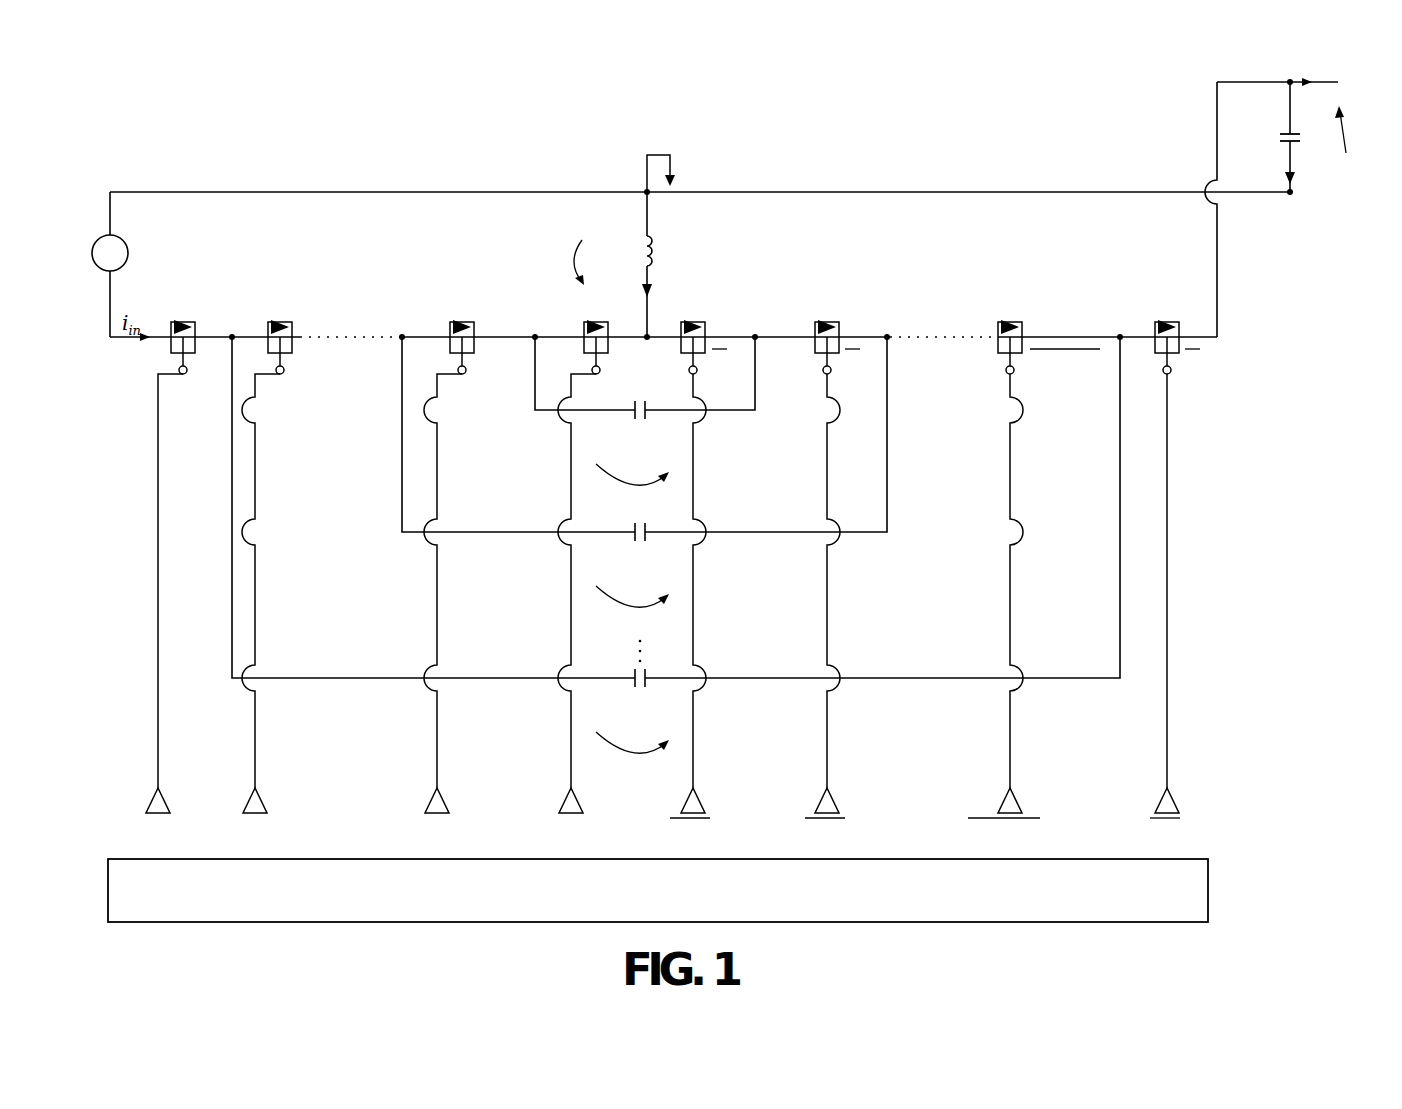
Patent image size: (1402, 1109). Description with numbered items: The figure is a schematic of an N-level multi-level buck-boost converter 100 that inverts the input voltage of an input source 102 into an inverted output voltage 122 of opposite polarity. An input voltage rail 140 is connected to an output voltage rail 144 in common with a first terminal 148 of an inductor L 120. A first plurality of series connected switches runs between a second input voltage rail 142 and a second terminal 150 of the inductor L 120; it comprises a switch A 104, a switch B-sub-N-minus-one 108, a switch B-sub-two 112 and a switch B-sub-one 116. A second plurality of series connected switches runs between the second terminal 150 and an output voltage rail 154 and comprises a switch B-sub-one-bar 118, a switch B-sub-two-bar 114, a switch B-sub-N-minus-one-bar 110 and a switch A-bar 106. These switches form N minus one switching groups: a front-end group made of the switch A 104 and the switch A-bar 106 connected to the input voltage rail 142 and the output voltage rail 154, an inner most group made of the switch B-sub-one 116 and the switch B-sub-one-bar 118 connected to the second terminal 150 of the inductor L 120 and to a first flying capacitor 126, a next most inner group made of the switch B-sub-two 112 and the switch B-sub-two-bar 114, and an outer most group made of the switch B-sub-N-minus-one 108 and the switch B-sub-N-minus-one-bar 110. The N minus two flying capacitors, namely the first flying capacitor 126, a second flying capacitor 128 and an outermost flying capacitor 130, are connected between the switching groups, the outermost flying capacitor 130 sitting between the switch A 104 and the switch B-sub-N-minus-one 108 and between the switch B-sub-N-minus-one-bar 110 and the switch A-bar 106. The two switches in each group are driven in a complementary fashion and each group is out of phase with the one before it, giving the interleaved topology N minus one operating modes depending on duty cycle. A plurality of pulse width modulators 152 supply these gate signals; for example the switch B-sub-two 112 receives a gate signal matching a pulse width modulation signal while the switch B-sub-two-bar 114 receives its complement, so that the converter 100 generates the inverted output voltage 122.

The multi-level buck-boost converter 100 is at (140, 125).
The input source 102 is at (128, 250).
The switch A 104 is at (180, 322).
The switch A-bar 106 is at (1163, 322).
The switch B(N-1) 108 is at (282, 322).
The switch B(N-1)-bar 110 is at (1010, 322).
The switch B2 112 is at (455, 322).
The switch B2-bar 114 is at (832, 322).
The switch B1 116 is at (590, 322).
The switch B1-bar 118 is at (698, 322).
The inductor L 120 is at (652, 258).
The inverted output voltage 122 is at (1346, 153).
The flying capacitor CF1 126 is at (648, 412).
The flying capacitor CF2 128 is at (648, 534).
The flying capacitor CF(N-2) 130 is at (648, 681).
The input voltage rail 140 is at (215, 192).
The input voltage rail 142 is at (110, 337).
The output voltage rail 144 is at (1000, 192).
The first terminal of the inductor 148 is at (645, 187).
The second terminal of the inductor 150 is at (645, 334).
The pulse width modulators 152 is at (1208, 859).
The output voltage rail 154 is at (1220, 305).